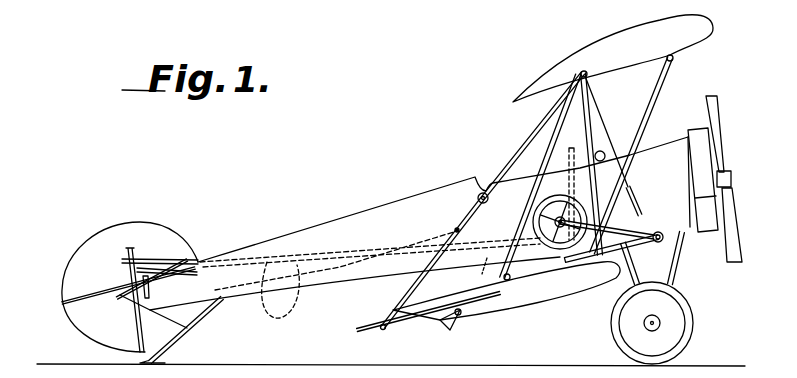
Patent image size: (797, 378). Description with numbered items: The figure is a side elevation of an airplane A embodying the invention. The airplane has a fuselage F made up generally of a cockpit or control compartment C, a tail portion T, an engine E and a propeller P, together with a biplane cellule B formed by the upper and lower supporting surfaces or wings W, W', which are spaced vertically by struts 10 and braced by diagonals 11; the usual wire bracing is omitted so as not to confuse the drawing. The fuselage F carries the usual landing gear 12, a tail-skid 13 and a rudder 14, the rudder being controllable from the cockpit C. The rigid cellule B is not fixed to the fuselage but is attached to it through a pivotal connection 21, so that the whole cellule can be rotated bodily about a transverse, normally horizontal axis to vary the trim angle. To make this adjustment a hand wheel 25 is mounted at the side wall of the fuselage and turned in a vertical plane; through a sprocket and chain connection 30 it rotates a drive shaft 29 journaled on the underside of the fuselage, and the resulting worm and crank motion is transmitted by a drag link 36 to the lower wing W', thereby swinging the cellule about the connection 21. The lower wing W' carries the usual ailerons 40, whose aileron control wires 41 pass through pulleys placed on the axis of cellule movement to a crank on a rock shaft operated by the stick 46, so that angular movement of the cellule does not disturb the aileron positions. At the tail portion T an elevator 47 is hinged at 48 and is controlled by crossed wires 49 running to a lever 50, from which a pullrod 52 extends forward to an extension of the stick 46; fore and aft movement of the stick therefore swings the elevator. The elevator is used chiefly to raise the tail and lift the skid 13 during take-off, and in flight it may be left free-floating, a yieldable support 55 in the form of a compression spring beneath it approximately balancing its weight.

The struts 10 is at (651, 105).
The diagonals 11 is at (592, 136).
The landing gear 12 is at (680, 337).
The tail-skid 13 is at (180, 347).
The rudder 14 is at (112, 226).
The pivotal connection 21 is at (589, 77).
The hand wheel 25 is at (593, 212).
The drive shaft 29 is at (672, 247).
The sprocket and chain connection 30 is at (660, 232).
The drag link 36 is at (614, 256).
The ailerons 40 is at (392, 333).
The aileron control wires 41 is at (408, 288).
The stick 46 is at (577, 162).
The elevator 47 is at (68, 306).
The hinge 48 is at (149, 285).
The crossed wires 49 is at (281, 293).
The lever 50 is at (462, 236).
The pullrod 52 is at (482, 274).
The yieldable support 55 is at (136, 292).
The airplane A is at (295, 207).
The biplane cellule B is at (586, 46).
The cockpit C is at (491, 184).
The engine E is at (696, 136).
The fuselage F is at (387, 212).
The propeller P is at (719, 110).
The tail portion T is at (236, 247).
The upper wing W is at (634, 58).
The lower wing W' is at (500, 296).